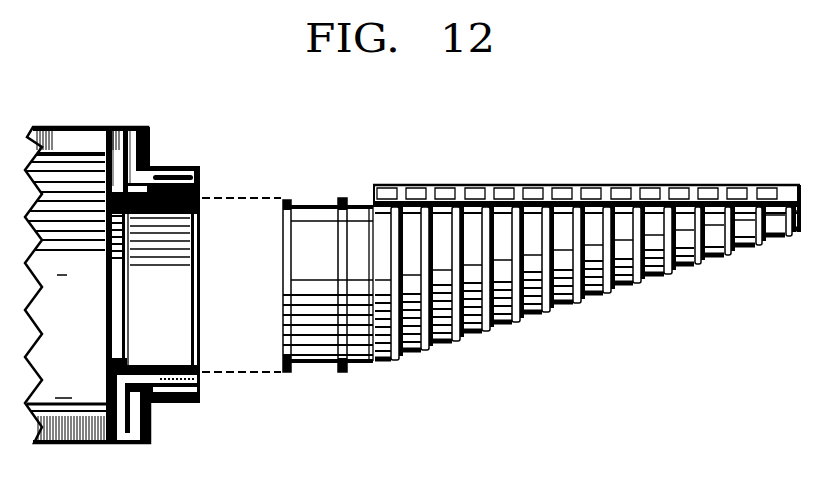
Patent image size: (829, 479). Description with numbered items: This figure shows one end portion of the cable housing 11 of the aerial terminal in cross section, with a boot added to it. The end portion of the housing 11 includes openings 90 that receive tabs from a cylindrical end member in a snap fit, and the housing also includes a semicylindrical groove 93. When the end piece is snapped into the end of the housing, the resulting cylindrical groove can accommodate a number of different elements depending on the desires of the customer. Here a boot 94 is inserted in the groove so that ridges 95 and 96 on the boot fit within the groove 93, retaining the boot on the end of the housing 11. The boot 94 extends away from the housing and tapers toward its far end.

The cable housing 11 is at (65, 128).
The opening 90 is at (180, 172).
The groove 93 is at (172, 291).
The boot 94 is at (558, 305).
The ridge 95 is at (342, 373).
The ridge 96 is at (288, 198).